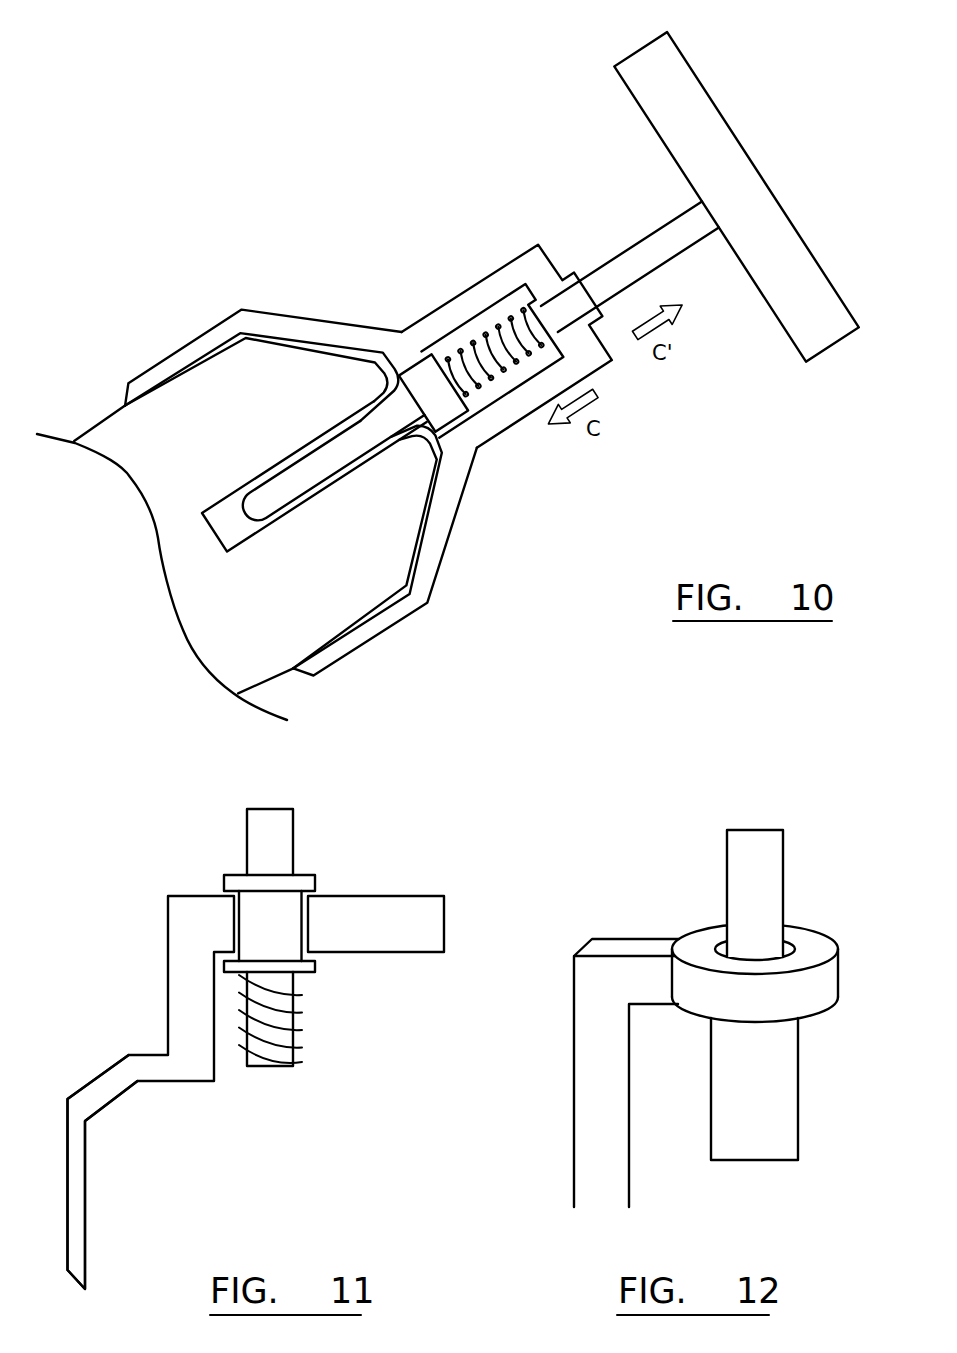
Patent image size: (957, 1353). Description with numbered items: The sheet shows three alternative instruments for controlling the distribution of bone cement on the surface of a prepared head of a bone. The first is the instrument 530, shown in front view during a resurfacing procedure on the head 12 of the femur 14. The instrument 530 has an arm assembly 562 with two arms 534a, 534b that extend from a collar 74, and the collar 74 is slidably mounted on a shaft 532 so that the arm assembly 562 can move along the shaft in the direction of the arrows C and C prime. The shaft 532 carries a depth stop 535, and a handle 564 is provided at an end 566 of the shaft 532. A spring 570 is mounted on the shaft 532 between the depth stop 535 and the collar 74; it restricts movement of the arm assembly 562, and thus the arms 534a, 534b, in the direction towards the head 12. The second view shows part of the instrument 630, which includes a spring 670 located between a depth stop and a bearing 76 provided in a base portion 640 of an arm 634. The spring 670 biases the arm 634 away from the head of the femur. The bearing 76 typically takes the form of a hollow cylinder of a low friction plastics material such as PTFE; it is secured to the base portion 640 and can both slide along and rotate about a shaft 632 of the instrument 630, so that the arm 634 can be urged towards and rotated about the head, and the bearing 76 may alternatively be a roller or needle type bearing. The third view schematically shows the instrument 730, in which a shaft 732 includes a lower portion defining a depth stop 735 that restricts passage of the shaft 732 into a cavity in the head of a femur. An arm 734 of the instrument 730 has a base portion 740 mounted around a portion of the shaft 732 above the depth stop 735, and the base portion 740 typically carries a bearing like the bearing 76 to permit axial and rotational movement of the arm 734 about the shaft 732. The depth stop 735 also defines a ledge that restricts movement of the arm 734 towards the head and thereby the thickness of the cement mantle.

In FIG. 10, the handle 564 is at (690, 118).
In FIG. 10, the instrument 530 is at (487, 381).
In FIG. 10, the arm assembly 562 is at (527, 237).
In FIG. 10, the collar 74 is at (562, 312).
In FIG. 10, the arm 534a is at (178, 345).
In FIG. 10, the head 12 is at (287, 390).
In FIG. 10, the spring 570 is at (482, 333).
In FIG. 10, the end 566 is at (700, 262).
In FIG. 10, the depth stop 535 is at (450, 415).
In FIG. 10, the shaft 532 is at (357, 437).
In FIG. 10, the femur 14 is at (257, 595).
In FIG. 10, the arm 534b is at (388, 638).
In FIG. 11, the shaft 632 is at (264, 828).
In FIG. 11, the instrument 630 is at (186, 867).
In FIG. 11, the bearing 76 is at (269, 891).
In FIG. 11, the base portion 640 is at (347, 878).
In FIG. 11, the arm 634 is at (94, 1062).
In FIG. 11, the spring 670 is at (295, 1016).
In FIG. 12, the instrument 730 is at (706, 1018).
In FIG. 12, the base portion 740 is at (657, 918).
In FIG. 12, the shaft 732 is at (755, 881).
In FIG. 12, the depth stop 735 is at (757, 1087).
In FIG. 12, the arm 734 is at (561, 1078).